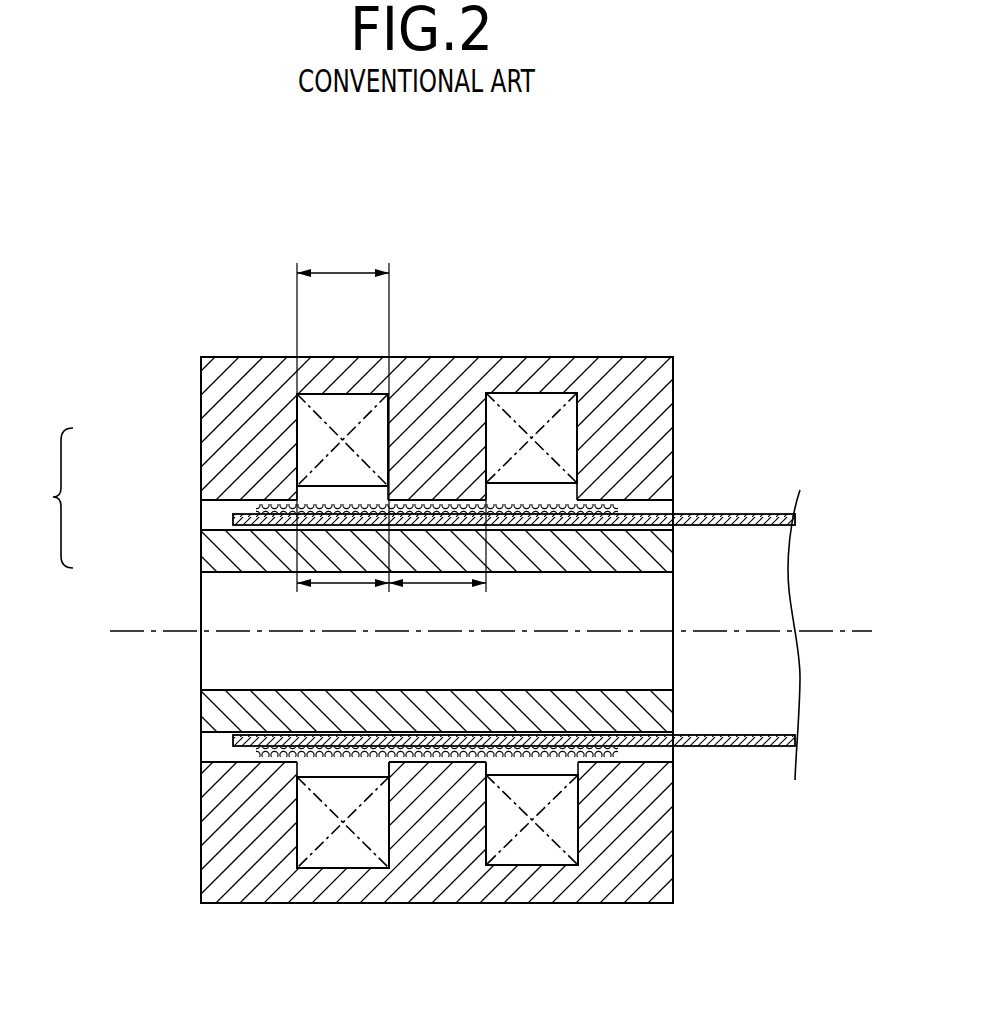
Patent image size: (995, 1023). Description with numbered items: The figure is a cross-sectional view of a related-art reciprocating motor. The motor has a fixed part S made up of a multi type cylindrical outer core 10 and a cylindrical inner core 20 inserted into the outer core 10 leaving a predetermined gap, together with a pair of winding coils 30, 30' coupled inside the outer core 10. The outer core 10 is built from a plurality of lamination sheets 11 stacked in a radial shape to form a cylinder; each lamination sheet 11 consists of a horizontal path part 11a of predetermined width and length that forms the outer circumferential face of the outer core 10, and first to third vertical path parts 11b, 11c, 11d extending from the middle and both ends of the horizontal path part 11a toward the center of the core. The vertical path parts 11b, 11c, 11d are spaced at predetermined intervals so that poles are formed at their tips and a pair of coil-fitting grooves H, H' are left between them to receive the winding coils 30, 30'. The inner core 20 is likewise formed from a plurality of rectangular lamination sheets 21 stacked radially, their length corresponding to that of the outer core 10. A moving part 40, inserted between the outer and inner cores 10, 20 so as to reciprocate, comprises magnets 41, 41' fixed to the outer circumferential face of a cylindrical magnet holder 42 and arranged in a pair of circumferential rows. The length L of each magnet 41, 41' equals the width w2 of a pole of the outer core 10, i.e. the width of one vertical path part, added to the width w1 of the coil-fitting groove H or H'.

The multi type outer core 10 is at (185, 415).
The lamination sheet 11 is at (220, 383).
The horizontal path part 11a is at (438, 885).
The first vertical path part 11b is at (237, 808).
The second vertical path part 11c is at (430, 790).
The third vertical path part 11d is at (640, 805).
The cylindrical inner core 20 is at (185, 558).
The lamination sheet 21 is at (230, 565).
The winding coil 30 is at (342, 397).
The winding coil 30' is at (531, 395).
The moving part 40 is at (203, 752).
The magnet 41 is at (305, 880).
The magnet 41' is at (574, 878).
The magnet holder 42 is at (202, 727).
The fixed part S is at (51, 498).
The length of magnet L is at (343, 417).
The width of coil-fitting groove w1 is at (343, 599).
The width of pole w2 is at (437, 504).
The coil-fitting groove H is at (333, 872).
The coil-fitting groove H' is at (544, 869).